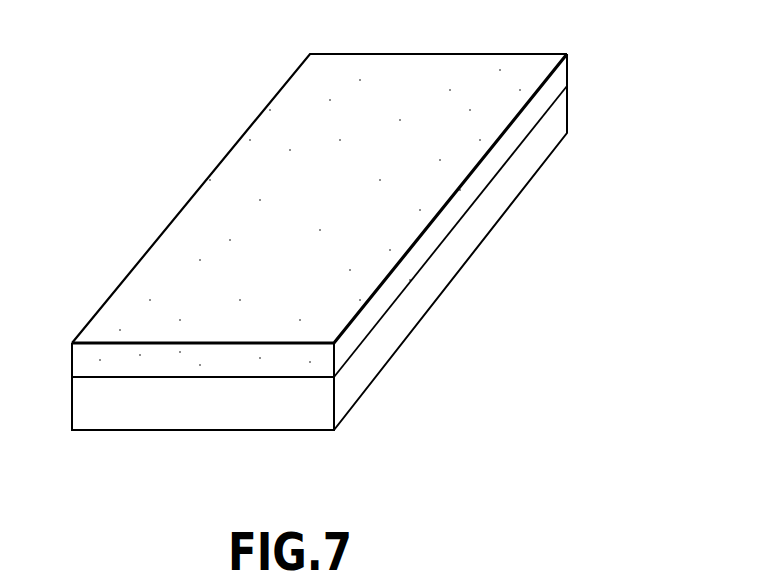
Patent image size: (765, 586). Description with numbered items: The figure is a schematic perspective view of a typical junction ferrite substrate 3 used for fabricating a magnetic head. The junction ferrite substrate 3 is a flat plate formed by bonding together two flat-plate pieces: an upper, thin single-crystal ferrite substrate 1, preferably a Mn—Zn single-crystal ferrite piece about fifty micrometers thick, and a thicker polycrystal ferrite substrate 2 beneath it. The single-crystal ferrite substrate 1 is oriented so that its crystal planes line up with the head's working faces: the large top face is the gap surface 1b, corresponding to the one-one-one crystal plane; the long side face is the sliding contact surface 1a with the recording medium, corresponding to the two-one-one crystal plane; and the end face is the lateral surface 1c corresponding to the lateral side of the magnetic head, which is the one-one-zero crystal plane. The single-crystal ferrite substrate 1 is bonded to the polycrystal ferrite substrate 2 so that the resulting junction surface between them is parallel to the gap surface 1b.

The single-crystal ferrite substrate 1 is at (118, 357).
The polycrystal ferrite substrate 2 is at (157, 410).
The junction ferrite substrate 3 is at (177, 466).
The sliding contact surface 1a is at (467, 193).
The gap surface 1b is at (456, 67).
The lateral surface 1c is at (297, 366).